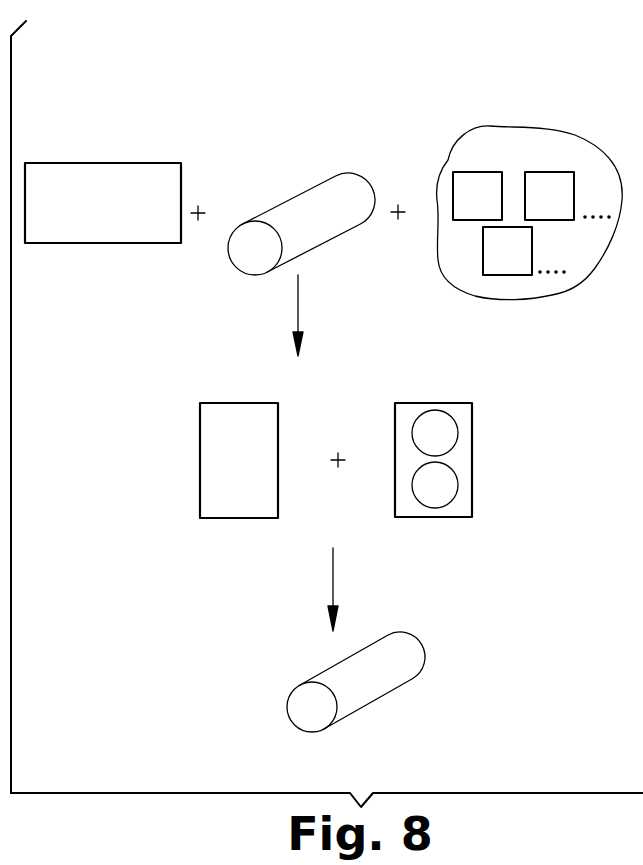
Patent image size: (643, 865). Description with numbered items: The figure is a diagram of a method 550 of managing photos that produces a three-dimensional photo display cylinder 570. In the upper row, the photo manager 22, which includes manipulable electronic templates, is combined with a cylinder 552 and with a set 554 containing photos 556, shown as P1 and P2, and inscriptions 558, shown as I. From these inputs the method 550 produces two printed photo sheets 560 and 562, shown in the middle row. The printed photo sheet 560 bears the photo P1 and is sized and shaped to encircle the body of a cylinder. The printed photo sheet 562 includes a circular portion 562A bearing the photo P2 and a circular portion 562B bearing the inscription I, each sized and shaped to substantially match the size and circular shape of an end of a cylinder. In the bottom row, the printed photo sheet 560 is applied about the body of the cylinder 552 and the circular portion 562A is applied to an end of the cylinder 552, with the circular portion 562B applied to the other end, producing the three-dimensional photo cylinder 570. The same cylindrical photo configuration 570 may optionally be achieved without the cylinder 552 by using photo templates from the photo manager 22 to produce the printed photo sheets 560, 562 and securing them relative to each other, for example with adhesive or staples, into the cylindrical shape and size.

The photo manager 22 is at (128, 163).
The method 550 is at (343, 93).
The cylinder 552 is at (288, 200).
The set 554 is at (522, 123).
The photos 556 is at (555, 170).
The inscriptions 558 is at (505, 277).
The printed photo sheet 560 is at (198, 425).
The printed photo sheet 562 is at (425, 403).
The circular portion 562A is at (458, 437).
The circular portion 562B is at (458, 487).
The photo display cylinder 570 is at (283, 680).